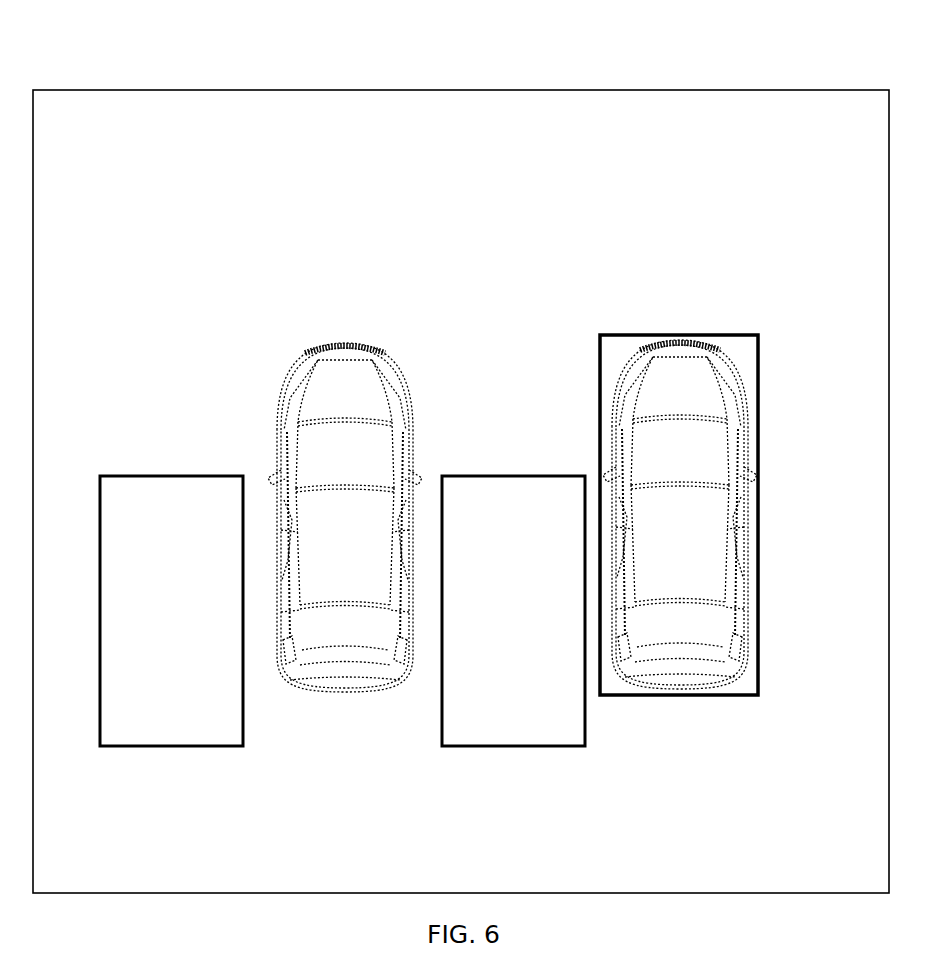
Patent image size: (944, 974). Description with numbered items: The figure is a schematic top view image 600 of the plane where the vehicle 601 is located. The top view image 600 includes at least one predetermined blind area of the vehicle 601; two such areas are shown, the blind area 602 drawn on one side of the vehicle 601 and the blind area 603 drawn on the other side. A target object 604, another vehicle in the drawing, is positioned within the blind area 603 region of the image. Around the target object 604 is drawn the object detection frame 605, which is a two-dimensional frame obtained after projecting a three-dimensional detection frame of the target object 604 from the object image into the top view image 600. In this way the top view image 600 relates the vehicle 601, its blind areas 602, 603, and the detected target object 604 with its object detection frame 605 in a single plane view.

The top view image 600 is at (413, 90).
The vehicle 601 is at (315, 343).
The blind area 602 is at (174, 476).
The blind area 603 is at (510, 475).
The target object 604 is at (682, 542).
The object detection frame 605 is at (683, 697).